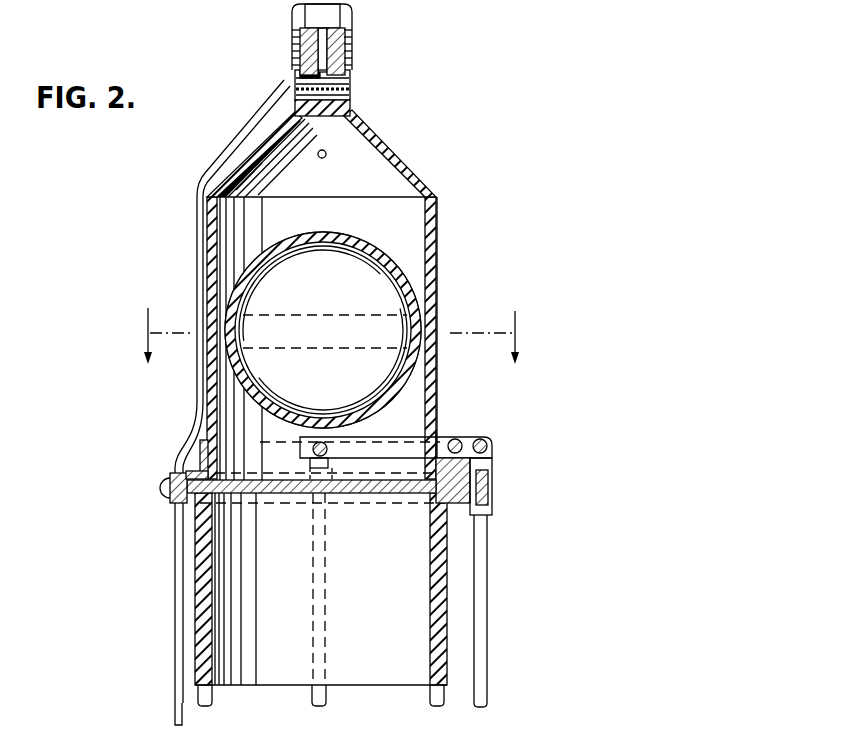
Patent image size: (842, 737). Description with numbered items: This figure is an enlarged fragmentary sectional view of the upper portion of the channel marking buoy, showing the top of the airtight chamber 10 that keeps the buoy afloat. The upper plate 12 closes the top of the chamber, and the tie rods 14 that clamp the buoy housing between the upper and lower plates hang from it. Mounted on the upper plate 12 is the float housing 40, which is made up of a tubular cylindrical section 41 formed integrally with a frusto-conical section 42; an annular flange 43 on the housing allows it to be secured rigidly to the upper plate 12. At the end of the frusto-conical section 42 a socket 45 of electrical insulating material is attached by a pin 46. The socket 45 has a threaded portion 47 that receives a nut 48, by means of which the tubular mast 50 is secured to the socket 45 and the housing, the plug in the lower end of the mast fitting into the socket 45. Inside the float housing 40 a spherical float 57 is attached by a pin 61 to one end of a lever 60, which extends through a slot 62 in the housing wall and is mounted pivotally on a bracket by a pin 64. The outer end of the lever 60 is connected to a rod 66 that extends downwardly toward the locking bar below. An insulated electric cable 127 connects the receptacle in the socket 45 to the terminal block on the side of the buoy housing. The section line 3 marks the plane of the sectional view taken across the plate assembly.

The section line 3- 3 is at (332, 323).
The airtight chamber 10 is at (455, 680).
The upper plate 12 is at (402, 493).
The tie rods 14 is at (210, 697).
The float housing 40 is at (444, 242).
The tubular cylindrical section 41 is at (437, 353).
The frusto-conical section 42 is at (386, 148).
The annular flange 43 is at (193, 456).
The socket 45 is at (325, 116).
The pin 46 is at (344, 93).
The threaded portion 47 is at (302, 42).
The nut 48 is at (346, 48).
The tubular mast 50 is at (322, 16).
The spherical float 57 is at (374, 249).
The lever 60 is at (390, 441).
The pin 61 is at (311, 452).
The slot 62 is at (437, 428).
The pin 64 is at (485, 439).
The rod 66 is at (481, 625).
The insulated electric cable 127 is at (200, 231).